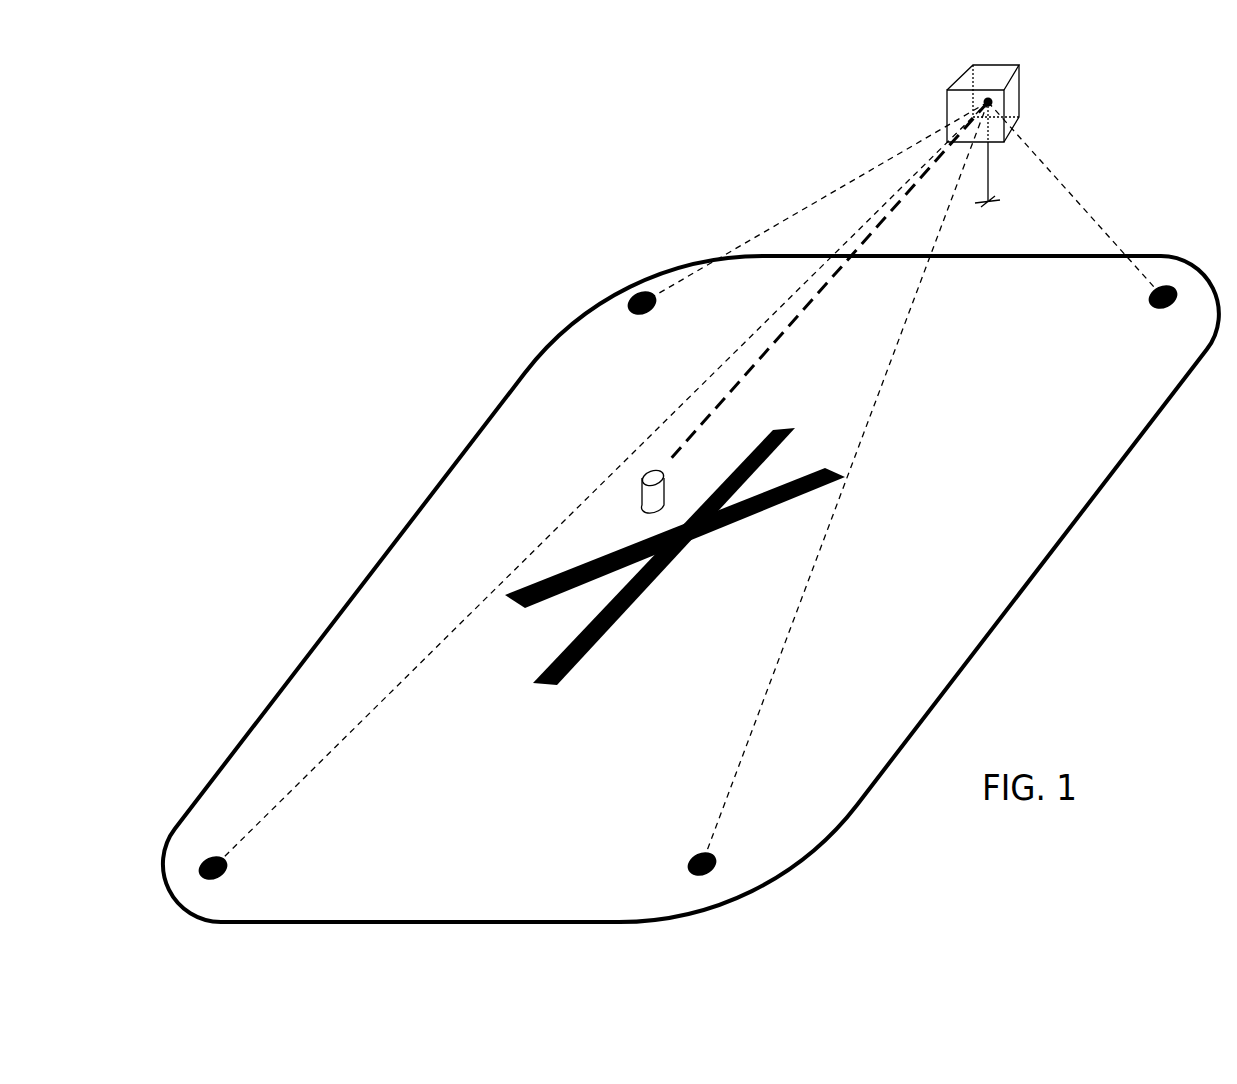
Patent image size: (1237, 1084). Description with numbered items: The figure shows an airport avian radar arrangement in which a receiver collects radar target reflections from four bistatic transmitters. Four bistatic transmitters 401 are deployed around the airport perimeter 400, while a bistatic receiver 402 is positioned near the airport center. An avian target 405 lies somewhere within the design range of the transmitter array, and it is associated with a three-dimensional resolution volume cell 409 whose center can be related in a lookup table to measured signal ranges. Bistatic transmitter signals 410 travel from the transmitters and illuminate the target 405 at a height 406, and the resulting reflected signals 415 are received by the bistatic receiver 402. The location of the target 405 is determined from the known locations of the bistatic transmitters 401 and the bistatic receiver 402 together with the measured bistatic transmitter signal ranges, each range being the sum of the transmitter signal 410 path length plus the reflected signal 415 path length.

The airport perimeter 400 is at (1052, 545).
The bistatic transmitter 401 is at (630, 296).
The bistatic receiver 402 is at (640, 497).
The avian target 405 is at (982, 101).
The height 406 is at (992, 163).
The 3D resolution volume cell 409 is at (1017, 93).
The bistatic transmitter signal 410 is at (782, 220).
The reflected signal 415 is at (772, 342).